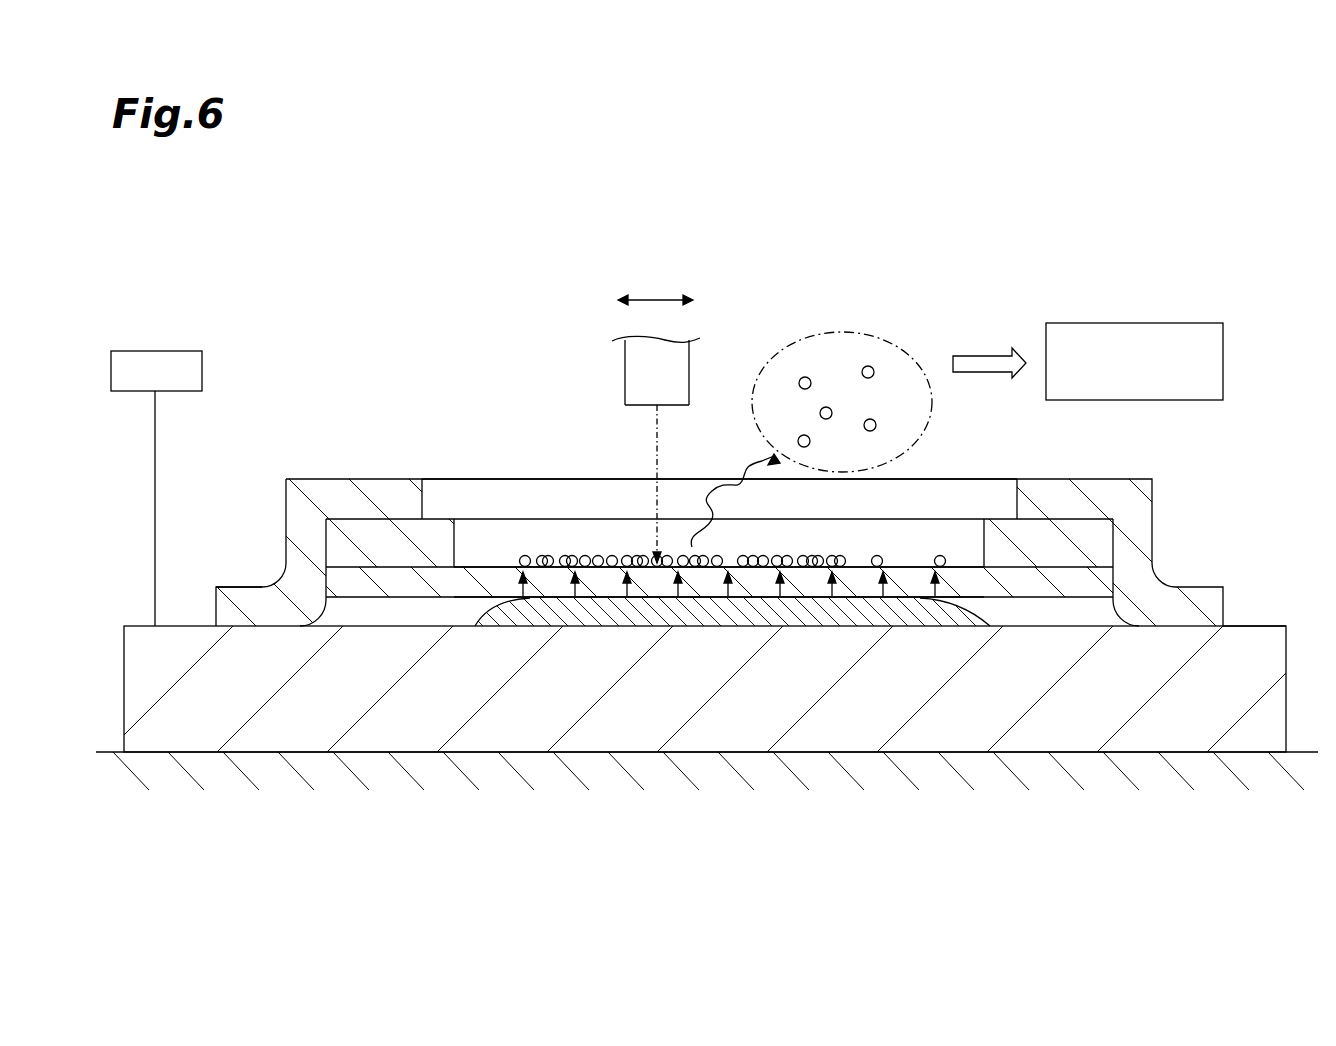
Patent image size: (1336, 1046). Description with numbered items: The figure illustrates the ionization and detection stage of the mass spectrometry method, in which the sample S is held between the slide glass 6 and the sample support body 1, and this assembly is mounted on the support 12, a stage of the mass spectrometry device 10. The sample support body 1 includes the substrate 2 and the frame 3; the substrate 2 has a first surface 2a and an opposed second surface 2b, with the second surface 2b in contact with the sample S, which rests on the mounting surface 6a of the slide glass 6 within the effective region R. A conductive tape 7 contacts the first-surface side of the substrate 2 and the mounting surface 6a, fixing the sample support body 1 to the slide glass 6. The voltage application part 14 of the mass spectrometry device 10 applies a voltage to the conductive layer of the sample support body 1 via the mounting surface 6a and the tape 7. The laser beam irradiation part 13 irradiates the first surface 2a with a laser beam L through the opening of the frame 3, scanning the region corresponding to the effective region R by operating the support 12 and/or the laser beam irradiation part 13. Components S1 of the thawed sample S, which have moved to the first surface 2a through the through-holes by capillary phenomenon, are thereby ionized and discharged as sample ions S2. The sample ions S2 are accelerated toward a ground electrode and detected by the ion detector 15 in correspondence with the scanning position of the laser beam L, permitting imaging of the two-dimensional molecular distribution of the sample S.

The sample support body 1 is at (1072, 516).
The substrate 2 is at (1097, 583).
The first surface 2a is at (485, 564).
The second surface 2b is at (470, 605).
The frame 3 is at (1000, 531).
The slide glass 6 is at (1272, 703).
The mounting surface 6a is at (1245, 626).
The tape 7 is at (245, 587).
The mass spectrometry device 10 is at (1206, 246).
The support 12 is at (105, 751).
The laser beam irradiation part 13 is at (627, 379).
The voltage application part 14 is at (203, 365).
The ion detector 15 is at (1224, 362).
The laser beam L is at (657, 440).
The effective region R is at (965, 563).
The sample S is at (984, 622).
The components S1 is at (846, 566).
The sample ions S2 is at (868, 365).